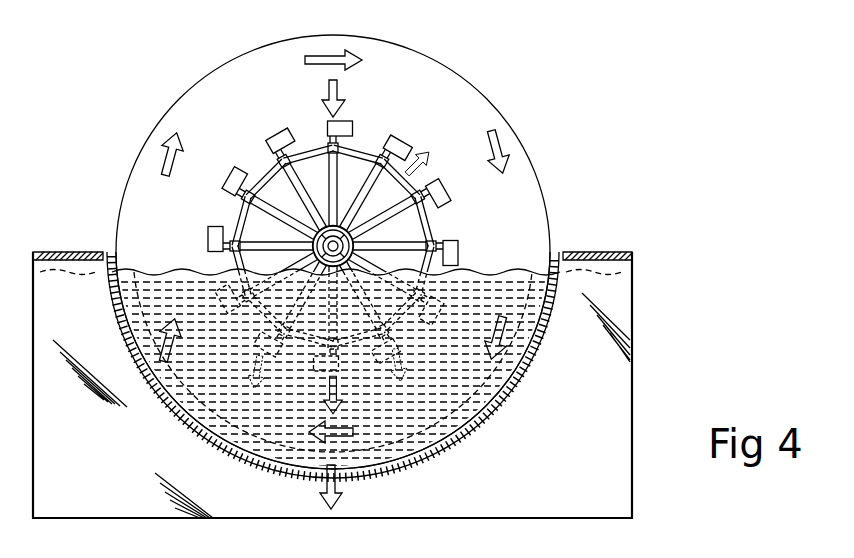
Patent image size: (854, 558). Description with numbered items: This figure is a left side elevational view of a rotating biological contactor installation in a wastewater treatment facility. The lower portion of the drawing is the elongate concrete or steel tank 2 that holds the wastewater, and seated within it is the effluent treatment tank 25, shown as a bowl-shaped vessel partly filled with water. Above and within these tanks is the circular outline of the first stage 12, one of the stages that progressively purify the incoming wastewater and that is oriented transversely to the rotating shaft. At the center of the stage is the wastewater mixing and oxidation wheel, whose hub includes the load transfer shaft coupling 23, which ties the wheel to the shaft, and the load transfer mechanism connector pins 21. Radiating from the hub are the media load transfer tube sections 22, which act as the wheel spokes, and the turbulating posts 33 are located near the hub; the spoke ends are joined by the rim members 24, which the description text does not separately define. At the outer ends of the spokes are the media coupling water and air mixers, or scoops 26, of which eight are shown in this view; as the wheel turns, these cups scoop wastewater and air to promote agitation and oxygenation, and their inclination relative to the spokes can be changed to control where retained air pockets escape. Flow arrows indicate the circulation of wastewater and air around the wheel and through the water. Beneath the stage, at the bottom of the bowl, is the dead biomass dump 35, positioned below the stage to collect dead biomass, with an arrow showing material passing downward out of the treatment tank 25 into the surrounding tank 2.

The tank 2 is at (634, 372).
The first stage 12 is at (475, 88).
The load transfer mechanism connector pin 21 is at (315, 245).
The media load transfer tube section 22 is at (290, 210).
The load transfer shaft coupling 23 is at (313, 240).
The rim 24 is at (327, 148).
The effluent treatment tank 25 is at (548, 273).
The scoop 26 is at (404, 142).
The turbulating posts 33 is at (313, 262).
The dead biomass dump 35 is at (340, 485).